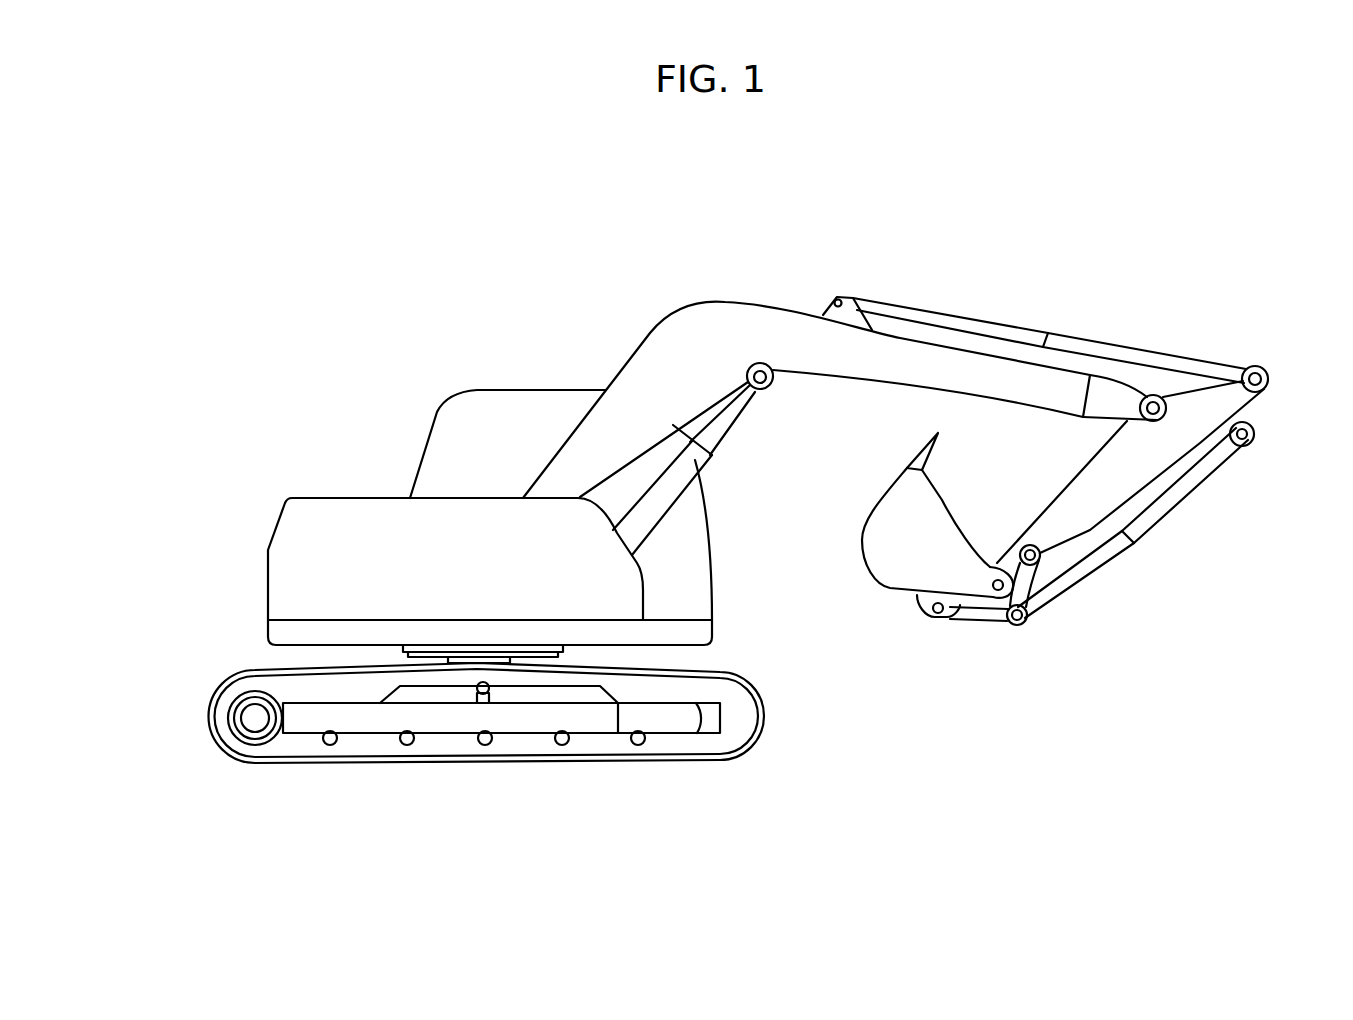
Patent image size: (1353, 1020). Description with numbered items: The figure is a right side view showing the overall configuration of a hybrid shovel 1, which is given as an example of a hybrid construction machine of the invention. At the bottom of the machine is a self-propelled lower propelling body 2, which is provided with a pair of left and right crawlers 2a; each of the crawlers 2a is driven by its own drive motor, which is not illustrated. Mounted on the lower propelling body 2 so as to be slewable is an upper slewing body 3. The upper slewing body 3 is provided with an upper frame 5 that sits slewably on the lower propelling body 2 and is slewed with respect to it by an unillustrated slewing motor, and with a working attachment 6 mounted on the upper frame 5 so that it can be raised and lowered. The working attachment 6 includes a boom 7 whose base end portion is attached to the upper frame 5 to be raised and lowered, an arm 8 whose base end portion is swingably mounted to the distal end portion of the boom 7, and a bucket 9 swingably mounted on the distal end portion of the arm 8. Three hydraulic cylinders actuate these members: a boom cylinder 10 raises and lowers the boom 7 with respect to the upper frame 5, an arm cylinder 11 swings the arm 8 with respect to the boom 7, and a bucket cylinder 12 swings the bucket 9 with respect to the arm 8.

The hybrid shovel 1 is at (404, 369).
The lower propelling body 2 is at (198, 724).
The crawlers 2a is at (757, 692).
The upper slewing body 3 is at (244, 594).
The upper frame 5 is at (670, 648).
The working attachment 6 is at (1107, 299).
The boom 7 is at (708, 322).
The arm 8 is at (1087, 490).
The bucket 9 is at (900, 563).
The boom cylinder 10 is at (667, 495).
The arm cylinder 11 is at (947, 322).
The bucket cylinder 12 is at (1168, 502).